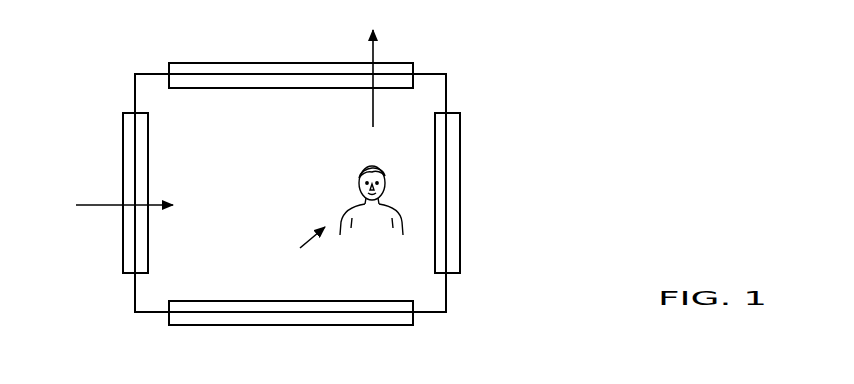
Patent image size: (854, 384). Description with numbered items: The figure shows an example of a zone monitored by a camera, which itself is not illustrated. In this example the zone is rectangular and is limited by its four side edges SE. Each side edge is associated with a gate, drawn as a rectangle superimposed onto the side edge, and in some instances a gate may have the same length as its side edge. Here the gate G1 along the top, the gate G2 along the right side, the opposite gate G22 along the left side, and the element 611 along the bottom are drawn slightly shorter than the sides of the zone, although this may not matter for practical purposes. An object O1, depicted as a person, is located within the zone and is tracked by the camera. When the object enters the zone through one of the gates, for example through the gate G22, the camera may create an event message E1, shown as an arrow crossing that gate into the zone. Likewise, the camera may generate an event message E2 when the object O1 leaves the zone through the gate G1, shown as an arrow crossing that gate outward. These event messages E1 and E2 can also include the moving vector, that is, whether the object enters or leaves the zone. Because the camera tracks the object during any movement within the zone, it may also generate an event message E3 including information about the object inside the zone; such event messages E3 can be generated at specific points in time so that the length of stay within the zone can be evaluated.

The side edges SE is at (135, 293).
The gate G1 is at (253, 63).
The gate G2 is at (460, 190).
The gate G22 is at (123, 164).
The bottom sensor panel 611 is at (407, 325).
The event message E1 is at (98, 207).
The event message E2 is at (375, 52).
The event message E3 is at (293, 245).
The object O1 is at (342, 173).